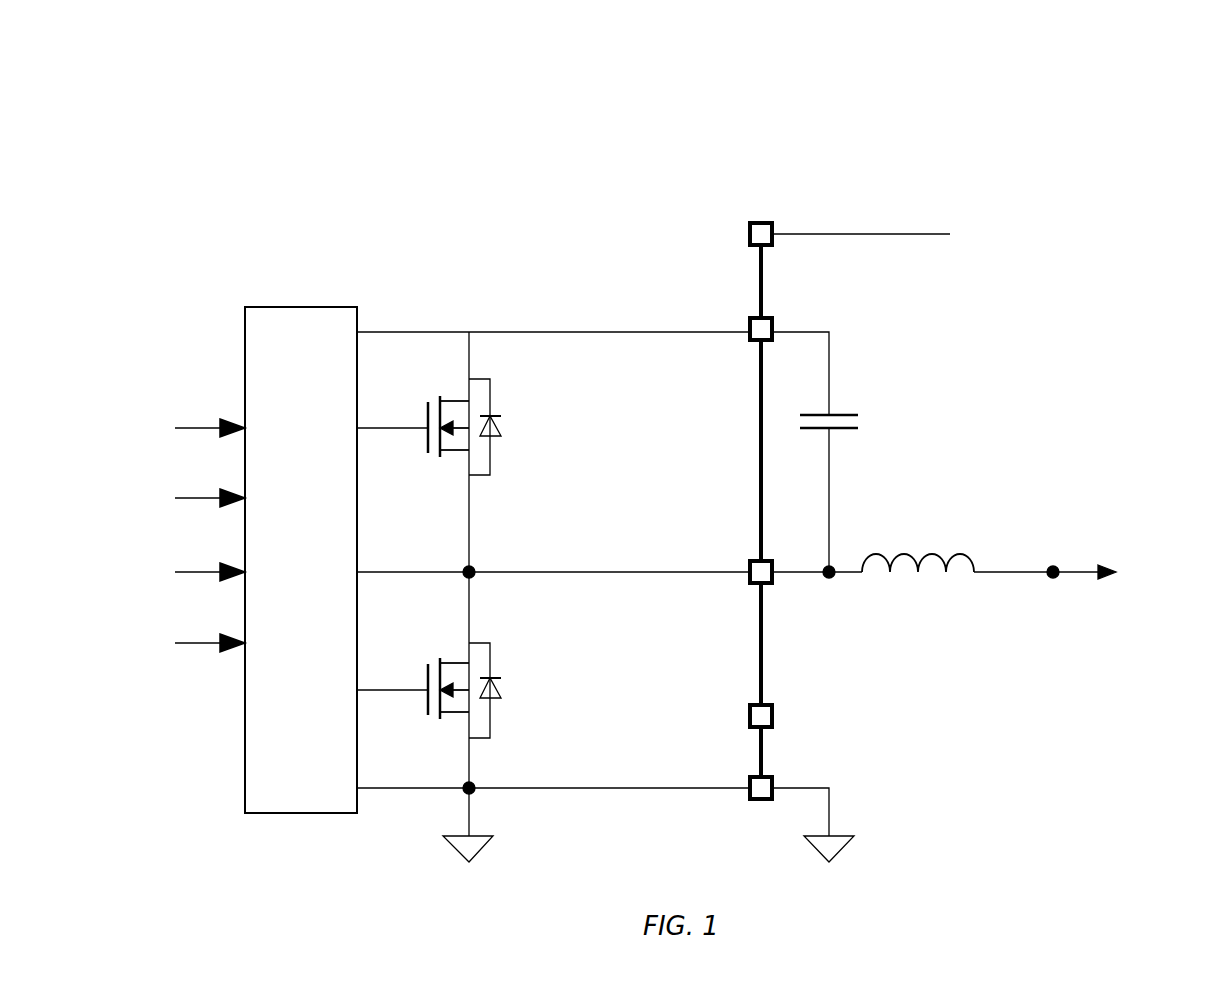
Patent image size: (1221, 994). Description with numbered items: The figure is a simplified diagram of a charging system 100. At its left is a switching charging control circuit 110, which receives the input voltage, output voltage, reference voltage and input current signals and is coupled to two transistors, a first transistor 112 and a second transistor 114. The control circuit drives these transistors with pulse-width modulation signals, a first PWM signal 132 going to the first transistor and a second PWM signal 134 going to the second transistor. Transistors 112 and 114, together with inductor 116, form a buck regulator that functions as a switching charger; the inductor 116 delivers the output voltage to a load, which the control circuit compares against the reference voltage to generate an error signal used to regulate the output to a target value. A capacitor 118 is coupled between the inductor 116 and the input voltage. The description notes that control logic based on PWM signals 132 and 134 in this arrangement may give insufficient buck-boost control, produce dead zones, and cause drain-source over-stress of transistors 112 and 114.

The charging system 100 is at (663, 33).
The switching charging control circuit 110 is at (306, 285).
The transistor Q1 112 is at (505, 391).
The transistor Q2 114 is at (506, 664).
The inductor 116 is at (939, 537).
The capacitor 118 is at (892, 398).
The PWM signal 132 is at (393, 421).
The PWM signal 134 is at (393, 684).